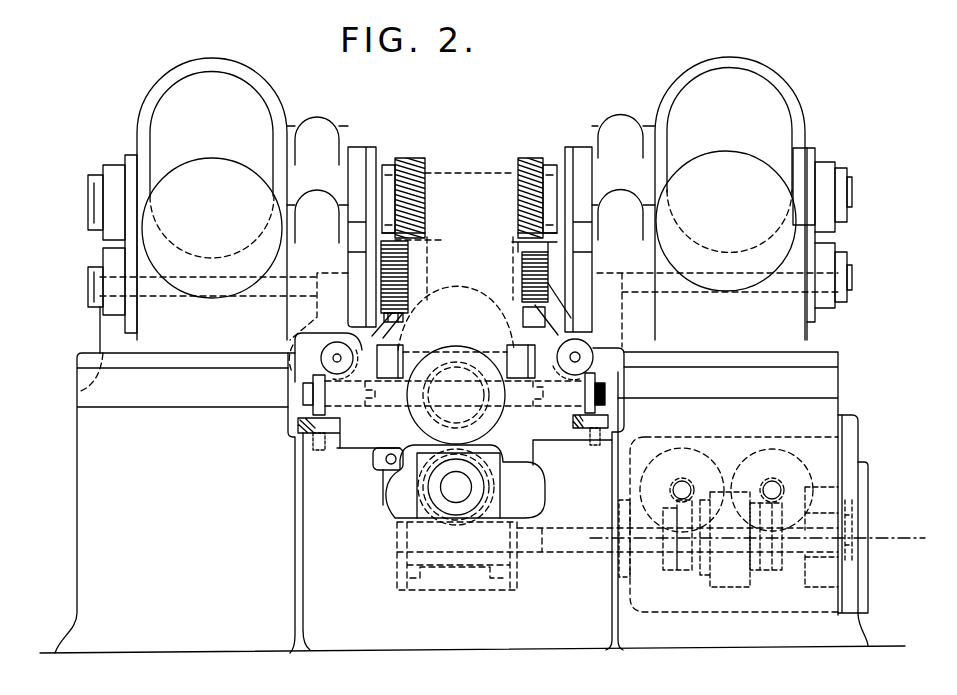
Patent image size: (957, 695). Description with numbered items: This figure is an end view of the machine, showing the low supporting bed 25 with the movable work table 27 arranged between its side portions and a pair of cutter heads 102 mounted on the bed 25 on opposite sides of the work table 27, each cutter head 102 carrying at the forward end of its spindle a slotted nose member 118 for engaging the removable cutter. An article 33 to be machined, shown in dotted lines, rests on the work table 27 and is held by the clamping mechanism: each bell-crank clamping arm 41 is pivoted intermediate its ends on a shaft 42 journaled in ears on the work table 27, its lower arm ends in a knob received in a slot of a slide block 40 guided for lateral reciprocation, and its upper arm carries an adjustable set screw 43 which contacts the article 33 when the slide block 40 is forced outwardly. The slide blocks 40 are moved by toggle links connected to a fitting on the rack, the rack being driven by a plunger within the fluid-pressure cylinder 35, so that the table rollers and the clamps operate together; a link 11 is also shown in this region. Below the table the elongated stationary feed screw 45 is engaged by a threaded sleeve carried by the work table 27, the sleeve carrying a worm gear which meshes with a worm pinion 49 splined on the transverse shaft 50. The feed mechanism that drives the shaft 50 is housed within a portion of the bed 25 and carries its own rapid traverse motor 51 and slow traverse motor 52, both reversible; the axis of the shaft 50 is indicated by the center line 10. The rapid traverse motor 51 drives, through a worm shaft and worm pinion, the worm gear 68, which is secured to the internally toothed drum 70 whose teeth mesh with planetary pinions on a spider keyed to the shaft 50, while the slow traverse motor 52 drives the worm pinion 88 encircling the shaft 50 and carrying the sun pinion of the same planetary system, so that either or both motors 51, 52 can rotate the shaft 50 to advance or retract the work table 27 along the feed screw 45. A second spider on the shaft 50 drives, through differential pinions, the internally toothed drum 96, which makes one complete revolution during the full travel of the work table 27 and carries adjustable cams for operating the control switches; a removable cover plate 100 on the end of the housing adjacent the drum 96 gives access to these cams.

The cutter head 102 is at (158, 133).
The slotted nose member 118 is at (387, 172).
The article to be machined 33 is at (473, 173).
The adjustable set screw 43 is at (387, 315).
The work table 27 is at (362, 350).
The link 11 is at (354, 325).
The shaft 42 is at (333, 357).
The clamping arm 41 is at (556, 332).
The slide block 40 is at (292, 383).
The cylinder 35 is at (483, 345).
The feed screw 45 is at (453, 487).
The shaft 50 is at (565, 516).
The worm pinion 49 is at (458, 565).
The center line 10 is at (736, 539).
The bed 25 is at (446, 476).
The rapid traverse motor 51 is at (700, 447).
The slow traverse motor 52 is at (766, 447).
The worm gear 68 is at (670, 572).
The drum 70 is at (727, 585).
The worm pinion 88 is at (782, 570).
The internally toothed drum 96 is at (845, 585).
The removable cover plate 100 is at (850, 438).